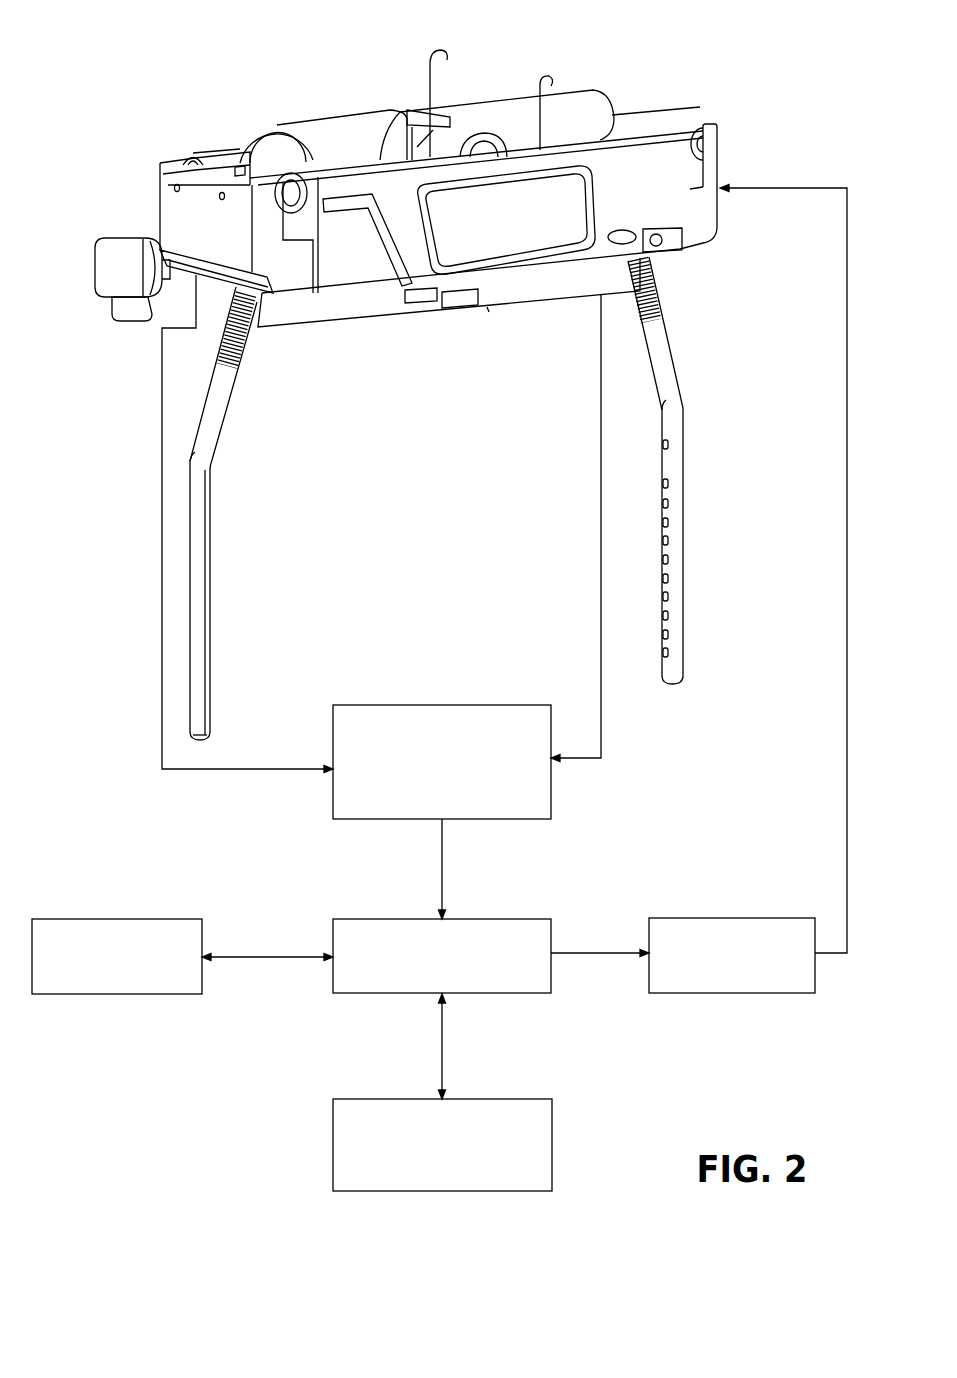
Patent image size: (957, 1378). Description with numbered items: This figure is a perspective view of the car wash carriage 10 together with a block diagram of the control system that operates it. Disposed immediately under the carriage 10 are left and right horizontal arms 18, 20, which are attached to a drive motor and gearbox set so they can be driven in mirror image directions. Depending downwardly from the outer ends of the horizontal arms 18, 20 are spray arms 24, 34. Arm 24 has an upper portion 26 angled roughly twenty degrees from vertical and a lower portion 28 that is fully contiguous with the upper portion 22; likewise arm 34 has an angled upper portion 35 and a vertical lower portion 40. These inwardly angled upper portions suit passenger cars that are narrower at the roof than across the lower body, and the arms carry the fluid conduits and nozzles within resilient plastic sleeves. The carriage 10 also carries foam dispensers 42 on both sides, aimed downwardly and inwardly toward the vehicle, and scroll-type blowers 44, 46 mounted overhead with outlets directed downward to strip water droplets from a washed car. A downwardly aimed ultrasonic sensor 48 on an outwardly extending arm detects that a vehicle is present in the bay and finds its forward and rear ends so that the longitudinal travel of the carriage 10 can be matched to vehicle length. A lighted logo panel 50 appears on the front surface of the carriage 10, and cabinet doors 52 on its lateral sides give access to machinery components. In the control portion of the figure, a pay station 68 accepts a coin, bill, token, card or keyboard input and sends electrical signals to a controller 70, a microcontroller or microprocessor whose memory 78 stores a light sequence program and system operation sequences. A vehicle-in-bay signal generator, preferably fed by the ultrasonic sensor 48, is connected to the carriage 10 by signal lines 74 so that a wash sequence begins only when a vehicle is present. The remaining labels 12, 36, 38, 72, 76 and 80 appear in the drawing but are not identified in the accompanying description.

The carriage 10 is at (407, 214).
The mounting posts 12 is at (187, 162).
The left horizontal arm 18 is at (327, 323).
The right horizontal arm 20 is at (487, 307).
The upper portion 22 is at (247, 349).
The spray arm 24 is at (254, 513).
The upper portion 26 is at (221, 449).
The lower portion 28 is at (212, 700).
The spray arm 34 is at (709, 470).
The angled upper portion 35 is at (662, 347).
The threaded portion of second arm 36 is at (655, 283).
The bend of second arm 38 is at (687, 398).
The vertical lower portion 40 is at (684, 553).
The foam dispensers 42 is at (95, 278).
The scroll-type blower 44 is at (346, 128).
The scroll-type blower 46 is at (565, 108).
The ultrasonic sensor 48 is at (700, 218).
The lighted logo panel 50 is at (493, 263).
The cabinet doors 52 is at (170, 222).
The pay station 68 is at (80, 995).
The controller 70 is at (330, 990).
The vehicle in bay and ends located signal 72 is at (436, 705).
The signal lines 74 is at (160, 628).
The second signal line 76 is at (601, 727).
The memory 78 is at (552, 1150).
The interface 80 is at (697, 918).